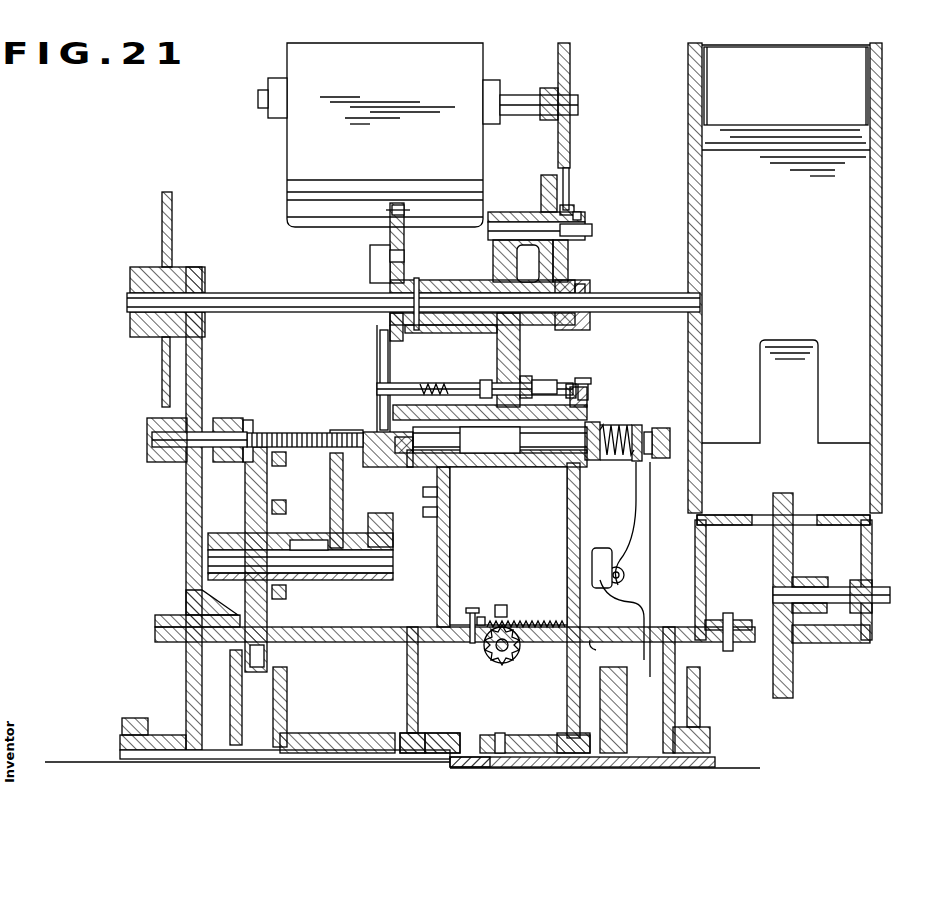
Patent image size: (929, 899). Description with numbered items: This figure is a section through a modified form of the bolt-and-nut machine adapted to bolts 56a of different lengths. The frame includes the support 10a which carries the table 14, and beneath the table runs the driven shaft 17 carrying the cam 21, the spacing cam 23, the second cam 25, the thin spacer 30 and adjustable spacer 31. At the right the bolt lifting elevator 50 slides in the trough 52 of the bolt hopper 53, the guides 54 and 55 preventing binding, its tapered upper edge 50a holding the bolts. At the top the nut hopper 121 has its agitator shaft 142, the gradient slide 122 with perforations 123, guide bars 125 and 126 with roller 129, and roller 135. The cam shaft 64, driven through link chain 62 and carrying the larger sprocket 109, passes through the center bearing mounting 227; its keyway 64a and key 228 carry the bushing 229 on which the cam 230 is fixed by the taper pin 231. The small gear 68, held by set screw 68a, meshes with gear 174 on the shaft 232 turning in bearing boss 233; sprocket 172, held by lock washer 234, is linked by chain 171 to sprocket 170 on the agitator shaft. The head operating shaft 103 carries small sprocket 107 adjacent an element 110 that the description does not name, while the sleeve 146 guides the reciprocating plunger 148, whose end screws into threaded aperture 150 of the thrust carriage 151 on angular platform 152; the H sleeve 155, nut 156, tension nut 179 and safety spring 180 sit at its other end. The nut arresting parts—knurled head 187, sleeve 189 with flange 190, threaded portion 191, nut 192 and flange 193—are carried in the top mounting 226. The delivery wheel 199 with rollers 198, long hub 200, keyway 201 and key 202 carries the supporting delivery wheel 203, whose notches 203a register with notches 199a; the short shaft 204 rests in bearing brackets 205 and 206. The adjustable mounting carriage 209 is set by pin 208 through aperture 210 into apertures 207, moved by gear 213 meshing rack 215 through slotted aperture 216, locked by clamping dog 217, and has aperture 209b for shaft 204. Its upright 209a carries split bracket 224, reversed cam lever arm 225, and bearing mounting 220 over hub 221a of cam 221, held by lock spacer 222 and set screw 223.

The support 10a is at (186, 665).
The larger sprocket 109 is at (162, 224).
The link chain 62 is at (138, 330).
The table 14 is at (155, 633).
The second cam 25 is at (230, 682).
The cam 21 is at (138, 720).
The driven shaft 17 is at (335, 760).
The spacing cam 23 is at (287, 698).
The spaced apertures 207 is at (412, 627).
The upright 209a is at (567, 505).
The bearing mounting 220 is at (540, 735).
The hub 221a is at (545, 767).
The lock spacer 222 is at (485, 760).
The cam 221 is at (620, 705).
The thin spacer 30 is at (420, 735).
The adjustable spacer 31 is at (450, 738).
The set screw 223 is at (500, 735).
The bolt lifting elevator 50 is at (856, 297).
The bolt hopper 53 is at (688, 93).
The guide 54 is at (707, 83).
The guide 55 is at (866, 70).
The tapered upper edge 50a is at (748, 130).
The trough 52 is at (860, 478).
The nut hopper 121 is at (413, 45).
The agitator shaft 142 is at (520, 97).
The sprocket 170 is at (570, 63).
The link chain 171 is at (570, 175).
The small sprocket 172 is at (572, 205).
The bearing boss 233 is at (505, 212).
The shaft 232 is at (592, 231).
The lock washer 234 is at (581, 215).
The key 228 is at (523, 261).
The gear 174 is at (560, 266).
The keyway 64a is at (458, 300).
The small gear 68 is at (565, 323).
The set screw 68a is at (585, 285).
The cam shaft 64 is at (620, 305).
The taper pin 231 is at (419, 292).
The guide bar 126 is at (404, 245).
The roller 129 is at (392, 235).
The guide bar 125 is at (370, 256).
The roller 135 is at (404, 258).
The gradient slide 122 is at (377, 322).
The bushing 229 is at (392, 322).
The perforations 123 is at (377, 360).
The top mounting 226 is at (497, 343).
The center bearing mounting 227 is at (445, 330).
The cam 230 is at (405, 345).
The nut 192 is at (486, 380).
The threaded portion 191 is at (440, 388).
The flange 190 is at (527, 376).
The sleeve 189 is at (540, 380).
The flange 193 is at (582, 380).
The knurled head 187 is at (576, 391).
The reciprocating plunger 148 is at (530, 455).
The sleeve 146 is at (485, 455).
The elongated thrust carriage 151 is at (375, 432).
The threaded aperture 150 is at (413, 434).
The spaced grooves or notches 203a is at (355, 430).
The angular platform 152 is at (430, 500).
The short shaft 204 is at (450, 553).
The aperture 209b is at (460, 557).
The adjustable mounting carriage 209 is at (555, 620).
The pin 208 is at (472, 610).
The clamping dog 217 is at (506, 610).
The gear rack 215 is at (528, 635).
The gear 213 is at (500, 664).
The aperture 210 is at (478, 640).
The adjustable tension nut 179 is at (592, 422).
The safety spring 180 is at (617, 433).
The H sleeve 155 is at (637, 425).
The nut 156 is at (660, 428).
The reversed cam lever arm 225 is at (650, 548).
The split bracket 224 is at (600, 575).
The slotted aperture 216 is at (596, 650).
The bearing bracket 205 is at (218, 533).
The supporting delivery wheel 203 is at (343, 482).
The bearing bracket 206 is at (382, 520).
The delivery wheel 199 is at (267, 495).
The rollers 198 is at (286, 460).
The elongated keyway 201 is at (290, 507).
The small key 202 is at (312, 540).
The long hub 200 is at (285, 598).
The spaced grooves or notches 199a is at (252, 430).
The lug 110 is at (235, 418).
The bolts 56a is at (292, 440).
The head operating shaft 103 is at (152, 436).
The small sprocket 107 is at (160, 462).